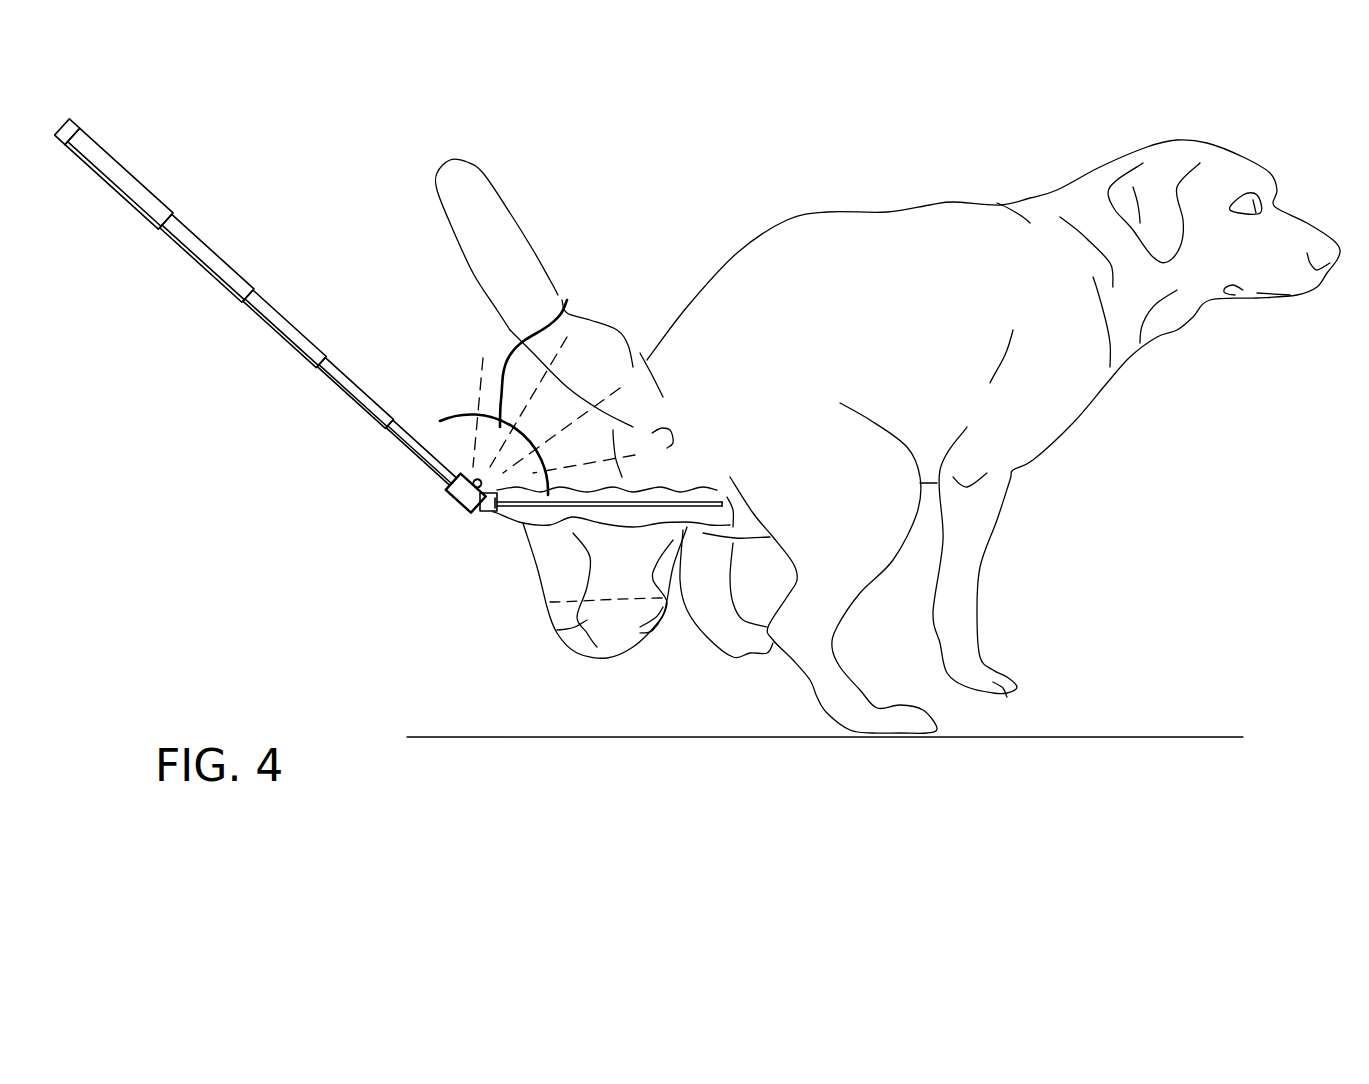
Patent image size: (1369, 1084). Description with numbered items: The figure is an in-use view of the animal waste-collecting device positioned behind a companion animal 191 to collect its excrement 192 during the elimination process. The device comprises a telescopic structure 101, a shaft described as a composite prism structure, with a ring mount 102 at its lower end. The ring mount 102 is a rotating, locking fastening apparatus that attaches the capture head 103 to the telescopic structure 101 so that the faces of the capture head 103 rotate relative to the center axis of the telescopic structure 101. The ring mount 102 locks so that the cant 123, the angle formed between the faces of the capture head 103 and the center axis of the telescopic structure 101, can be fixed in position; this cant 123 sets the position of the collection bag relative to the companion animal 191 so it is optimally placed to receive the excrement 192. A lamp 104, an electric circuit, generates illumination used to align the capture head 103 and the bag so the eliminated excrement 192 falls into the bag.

The telescopic structure 101 is at (293, 322).
The ring mount 102 is at (460, 500).
The capture head 103 is at (698, 510).
The lamp 104 is at (540, 563).
The cant 123 is at (567, 297).
The companion animal 191 is at (950, 253).
The excrement 192 is at (587, 620).